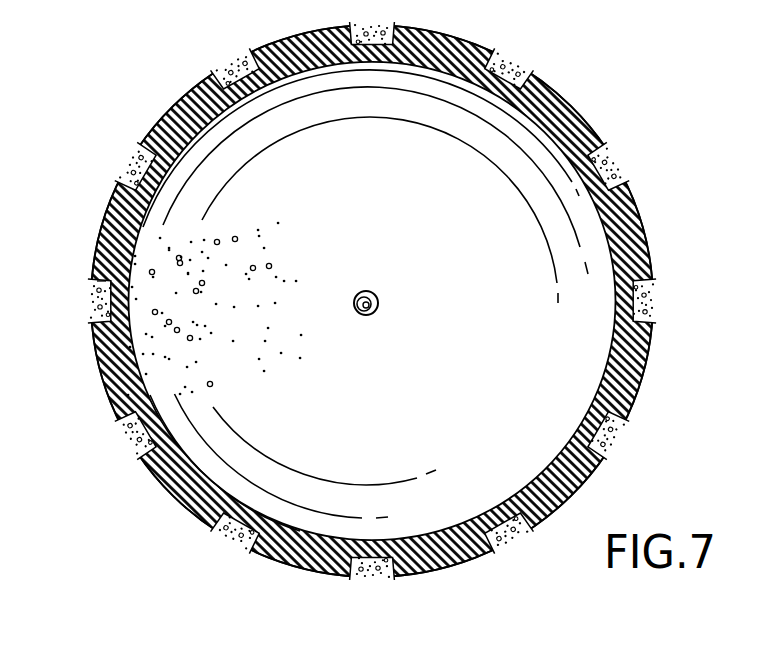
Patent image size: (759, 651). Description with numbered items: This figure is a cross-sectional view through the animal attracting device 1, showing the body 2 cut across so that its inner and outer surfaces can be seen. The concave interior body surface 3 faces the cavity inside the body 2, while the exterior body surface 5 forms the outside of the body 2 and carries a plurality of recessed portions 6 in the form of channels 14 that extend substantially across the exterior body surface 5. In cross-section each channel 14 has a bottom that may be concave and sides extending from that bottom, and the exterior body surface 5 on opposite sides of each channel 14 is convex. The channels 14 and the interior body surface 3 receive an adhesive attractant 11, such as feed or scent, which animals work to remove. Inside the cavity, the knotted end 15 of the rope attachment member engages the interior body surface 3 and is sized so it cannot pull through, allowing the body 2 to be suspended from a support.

The animal attracting device 1 is at (92, 101).
The body 2 is at (182, 108).
The interior body surface 3 is at (155, 258).
The exterior body surface 5 is at (90, 217).
The recessed portion 6 is at (128, 428).
The attractant 11 is at (85, 293).
The channel 14 is at (125, 440).
The knotted end 15 is at (380, 297).